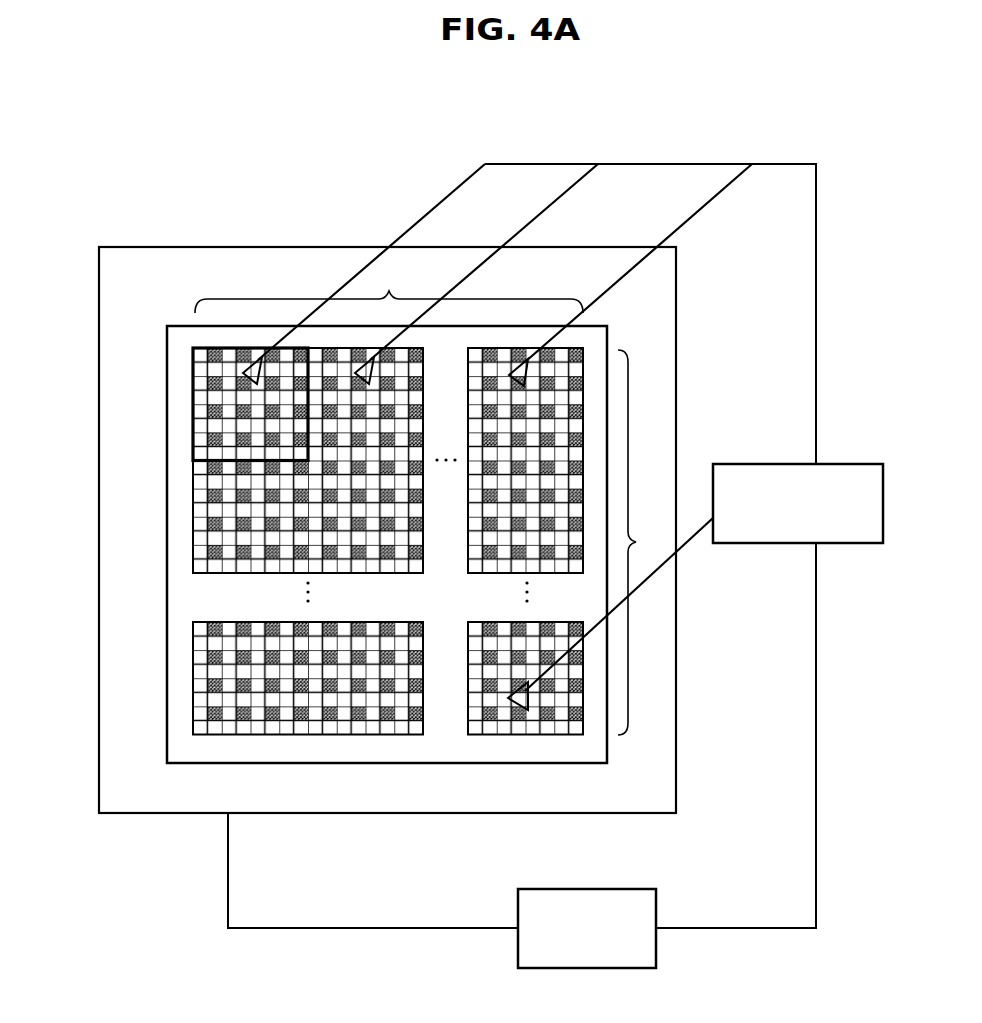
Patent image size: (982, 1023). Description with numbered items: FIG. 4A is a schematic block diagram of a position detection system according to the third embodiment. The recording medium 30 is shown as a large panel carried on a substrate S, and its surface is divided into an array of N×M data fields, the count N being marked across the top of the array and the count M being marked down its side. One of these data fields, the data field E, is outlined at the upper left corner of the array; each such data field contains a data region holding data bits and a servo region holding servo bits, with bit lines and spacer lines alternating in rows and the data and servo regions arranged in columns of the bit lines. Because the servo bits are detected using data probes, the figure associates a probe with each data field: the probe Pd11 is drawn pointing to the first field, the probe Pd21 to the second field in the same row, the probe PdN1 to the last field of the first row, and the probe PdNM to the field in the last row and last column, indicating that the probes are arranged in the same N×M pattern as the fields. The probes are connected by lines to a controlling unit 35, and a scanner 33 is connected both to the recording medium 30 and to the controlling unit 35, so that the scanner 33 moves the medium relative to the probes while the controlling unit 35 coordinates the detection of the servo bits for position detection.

The display panel 30 is at (180, 700).
The scanner 33 is at (613, 889).
The controlling unit 35 is at (840, 464).
The substrate S is at (113, 778).
The data field E is at (193, 404).
The number of data field columns N is at (389, 286).
The number of data field rows M is at (642, 542).
The pixel data line (1,1) Pd11 is at (453, 193).
The pixel data line (2,1) Pd21 is at (489, 261).
The pixel data line (N,1) PdN1 is at (688, 223).
The pixel data line (N,M) PdNM is at (650, 574).